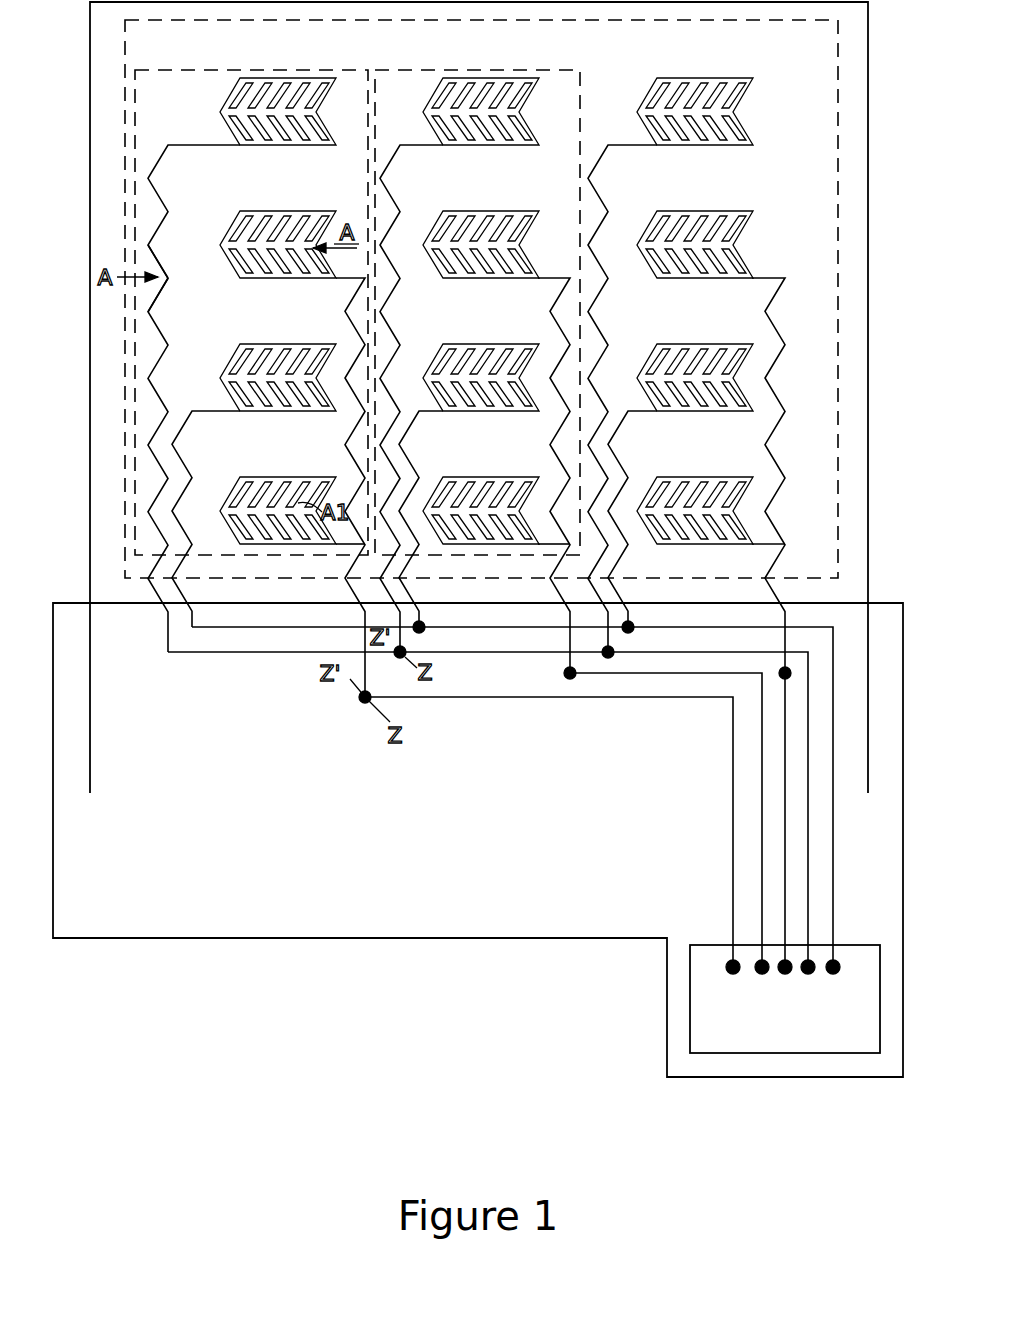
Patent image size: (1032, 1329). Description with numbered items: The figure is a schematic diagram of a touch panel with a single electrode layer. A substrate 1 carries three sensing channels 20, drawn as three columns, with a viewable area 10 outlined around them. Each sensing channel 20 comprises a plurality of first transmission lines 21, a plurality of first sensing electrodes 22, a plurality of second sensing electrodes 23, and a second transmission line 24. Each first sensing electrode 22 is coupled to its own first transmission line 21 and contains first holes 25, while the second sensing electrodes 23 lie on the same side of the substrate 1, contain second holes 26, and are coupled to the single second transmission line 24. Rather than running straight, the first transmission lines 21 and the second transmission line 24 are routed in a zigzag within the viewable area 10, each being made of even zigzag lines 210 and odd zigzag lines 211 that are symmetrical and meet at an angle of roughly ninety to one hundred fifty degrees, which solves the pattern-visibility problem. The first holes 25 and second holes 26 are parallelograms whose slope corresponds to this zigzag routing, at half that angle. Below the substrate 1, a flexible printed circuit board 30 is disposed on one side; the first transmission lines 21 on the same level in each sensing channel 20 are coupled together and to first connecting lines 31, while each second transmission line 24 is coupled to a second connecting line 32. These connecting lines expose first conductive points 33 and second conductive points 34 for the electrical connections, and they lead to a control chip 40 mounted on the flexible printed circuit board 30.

The substrate 1 is at (90, 4).
The viewable area 10 is at (125, 75).
The sensing channel 20 is at (180, 69).
The first transmission line 21 is at (158, 157).
The first sensing electrode 22 is at (292, 217).
The second sensing electrode 23 is at (278, 351).
The second transmission line 24 is at (355, 286).
The first hole 25 is at (315, 112).
The second hole 26 is at (305, 483).
The even zigzag line 210 is at (160, 258).
The odd zigzag line 211 is at (162, 298).
The flexible printed circuit board 30 is at (320, 938).
The first connecting line 31 is at (812, 812).
The second connecting line 32 is at (733, 802).
The first conductive point 33 is at (424, 627).
The second conductive point 34 is at (360, 703).
The control chip 40 is at (690, 985).